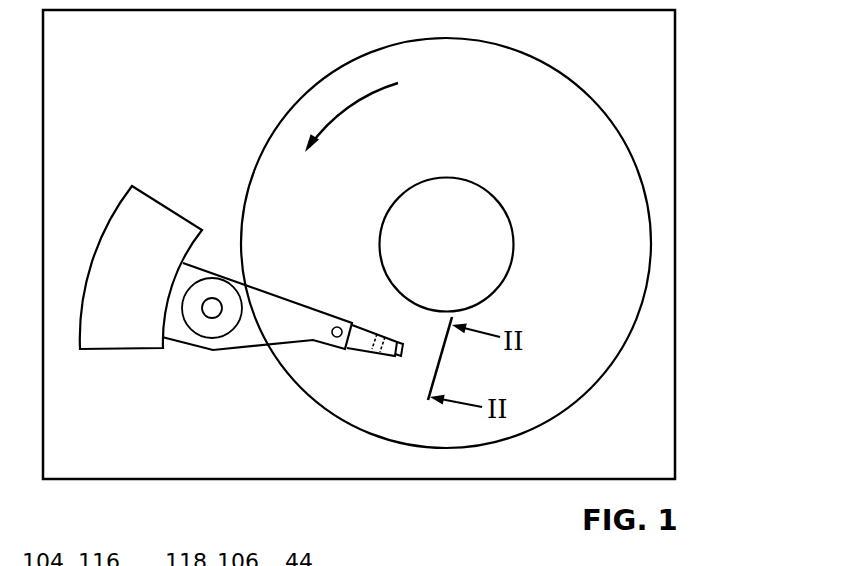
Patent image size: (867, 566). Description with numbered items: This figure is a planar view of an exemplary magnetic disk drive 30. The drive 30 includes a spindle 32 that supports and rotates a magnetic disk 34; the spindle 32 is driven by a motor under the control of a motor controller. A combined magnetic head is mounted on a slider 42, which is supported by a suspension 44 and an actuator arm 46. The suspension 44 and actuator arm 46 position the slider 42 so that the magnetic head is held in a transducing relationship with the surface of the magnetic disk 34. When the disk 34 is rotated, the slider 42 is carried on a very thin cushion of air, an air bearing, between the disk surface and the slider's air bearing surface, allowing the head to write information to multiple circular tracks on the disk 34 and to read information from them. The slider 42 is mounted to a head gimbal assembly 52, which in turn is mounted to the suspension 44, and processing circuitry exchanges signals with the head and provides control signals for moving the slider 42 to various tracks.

The magnetic disk drive 30 is at (694, 45).
The spindle 32 is at (485, 189).
The magnetic disk 34 is at (596, 266).
The slider 42 is at (400, 354).
The suspension 44 is at (362, 351).
The actuator arm 46 is at (267, 293).
The head gimbal assembly 52 is at (388, 338).